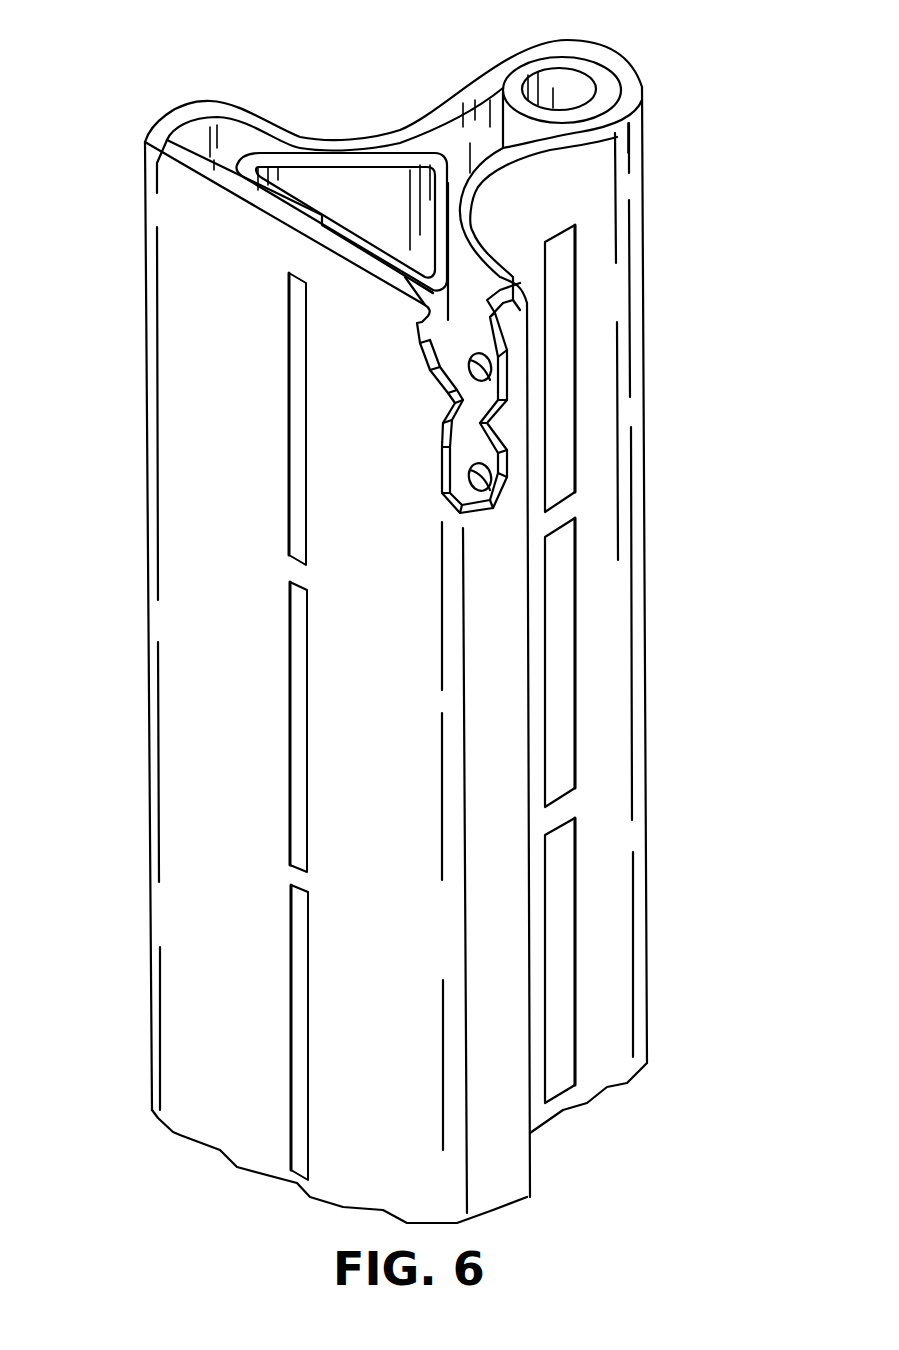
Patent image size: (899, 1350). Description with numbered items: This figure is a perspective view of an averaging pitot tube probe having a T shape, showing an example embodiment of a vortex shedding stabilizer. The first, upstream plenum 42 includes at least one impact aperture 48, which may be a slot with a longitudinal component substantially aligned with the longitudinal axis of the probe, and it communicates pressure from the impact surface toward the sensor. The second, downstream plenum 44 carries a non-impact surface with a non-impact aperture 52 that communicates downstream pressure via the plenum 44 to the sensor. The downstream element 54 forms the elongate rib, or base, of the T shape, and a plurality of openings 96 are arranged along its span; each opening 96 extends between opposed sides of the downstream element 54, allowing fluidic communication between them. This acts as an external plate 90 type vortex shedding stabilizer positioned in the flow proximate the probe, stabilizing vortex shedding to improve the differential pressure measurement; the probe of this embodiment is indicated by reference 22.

The post 22 is at (124, 80).
The first (upstream) plenum 42 is at (343, 197).
The second (downstream) plenum 44 is at (470, 290).
The impact aperture 48 is at (297, 417).
The non-impact aperture 52 is at (502, 393).
The downstream element 54 is at (627, 185).
The external plate (downstream element) 90 is at (662, 332).
The openings 96 is at (558, 298).